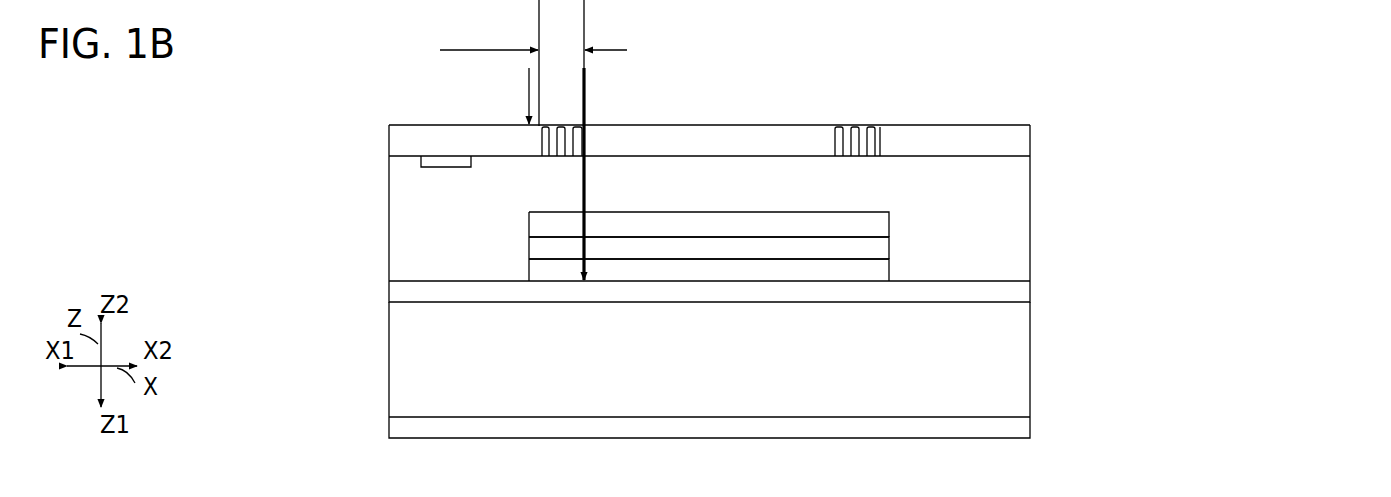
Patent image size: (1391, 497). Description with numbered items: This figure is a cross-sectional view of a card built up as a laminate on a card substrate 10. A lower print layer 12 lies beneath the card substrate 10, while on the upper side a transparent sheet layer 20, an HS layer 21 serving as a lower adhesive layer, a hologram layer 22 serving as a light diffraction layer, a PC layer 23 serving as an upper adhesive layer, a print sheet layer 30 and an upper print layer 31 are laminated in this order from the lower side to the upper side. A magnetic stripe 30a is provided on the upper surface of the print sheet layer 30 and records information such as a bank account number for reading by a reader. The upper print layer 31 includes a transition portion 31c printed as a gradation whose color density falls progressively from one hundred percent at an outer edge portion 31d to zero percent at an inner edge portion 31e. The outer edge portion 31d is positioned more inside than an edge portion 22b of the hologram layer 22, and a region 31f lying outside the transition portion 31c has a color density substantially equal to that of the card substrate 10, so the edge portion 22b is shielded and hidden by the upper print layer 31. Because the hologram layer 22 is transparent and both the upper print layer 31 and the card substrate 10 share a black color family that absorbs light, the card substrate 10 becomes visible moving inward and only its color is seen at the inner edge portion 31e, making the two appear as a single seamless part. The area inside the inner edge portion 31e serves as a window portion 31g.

The upper print layer 31 is at (1012, 137).
The print sheet layer 30 is at (1012, 172).
The magnetic stripe 30a is at (443, 164).
The transition portion 31c is at (562, 48).
The outer edge portion 31d is at (530, 127).
The inner edge portion 31e is at (590, 52).
The region 31f is at (533, 33).
The window portion 31g is at (733, 135).
The PC layer 23 is at (875, 224).
The hologram layer 22 is at (875, 249).
The edge portion 22b is at (527, 247).
The HS layer 21 is at (875, 271).
The transparent sheet layer 20 is at (1005, 290).
The card substrate 10 is at (970, 375).
The lower print layer 12 is at (1012, 432).